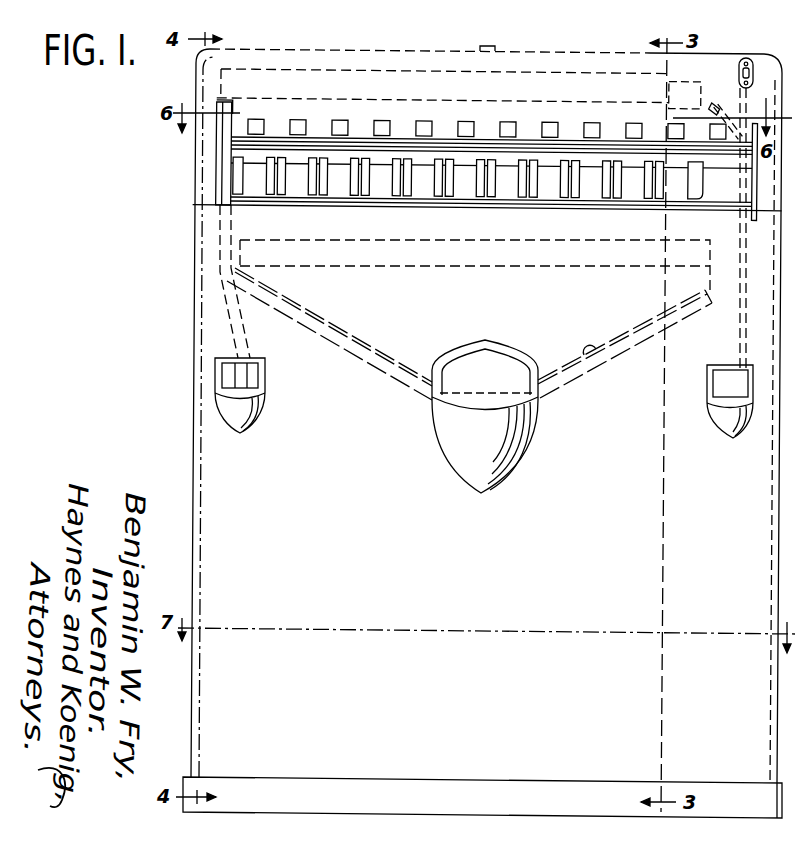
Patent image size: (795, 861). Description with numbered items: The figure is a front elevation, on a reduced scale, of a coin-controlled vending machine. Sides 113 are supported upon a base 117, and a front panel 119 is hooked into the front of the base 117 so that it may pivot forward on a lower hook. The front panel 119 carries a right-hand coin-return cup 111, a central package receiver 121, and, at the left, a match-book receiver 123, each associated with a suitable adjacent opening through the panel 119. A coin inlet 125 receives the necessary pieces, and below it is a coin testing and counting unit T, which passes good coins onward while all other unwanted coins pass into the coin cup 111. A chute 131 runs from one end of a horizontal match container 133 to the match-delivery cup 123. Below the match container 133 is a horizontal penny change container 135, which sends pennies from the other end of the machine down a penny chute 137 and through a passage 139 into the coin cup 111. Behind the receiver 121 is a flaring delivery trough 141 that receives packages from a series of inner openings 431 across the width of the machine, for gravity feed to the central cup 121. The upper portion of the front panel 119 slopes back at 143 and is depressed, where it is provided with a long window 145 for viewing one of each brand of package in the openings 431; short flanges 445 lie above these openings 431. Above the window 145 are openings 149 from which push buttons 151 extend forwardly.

The coin-return cup 111 is at (723, 420).
The sides 113 is at (193, 452).
The base 117 is at (510, 793).
The front panel 119 is at (466, 589).
The central package receiver 121 is at (448, 440).
The match-book receiver 123 is at (240, 423).
The coin inlet 125 is at (752, 88).
The chute 131 is at (214, 256).
The match container 133 is at (566, 102).
The penny change container 135 is at (684, 108).
The penny chute 137 is at (737, 120).
The passage 139 is at (740, 178).
The flaring delivery trough 141 is at (600, 353).
The sloping upper portion 143 is at (449, 70).
The long window 145 is at (480, 180).
The openings 149 is at (292, 121).
The push buttons 151 is at (337, 125).
The inner openings 431 is at (255, 185).
The short flanges 445 is at (366, 193).
The coin testing and counting unit T is at (731, 327).